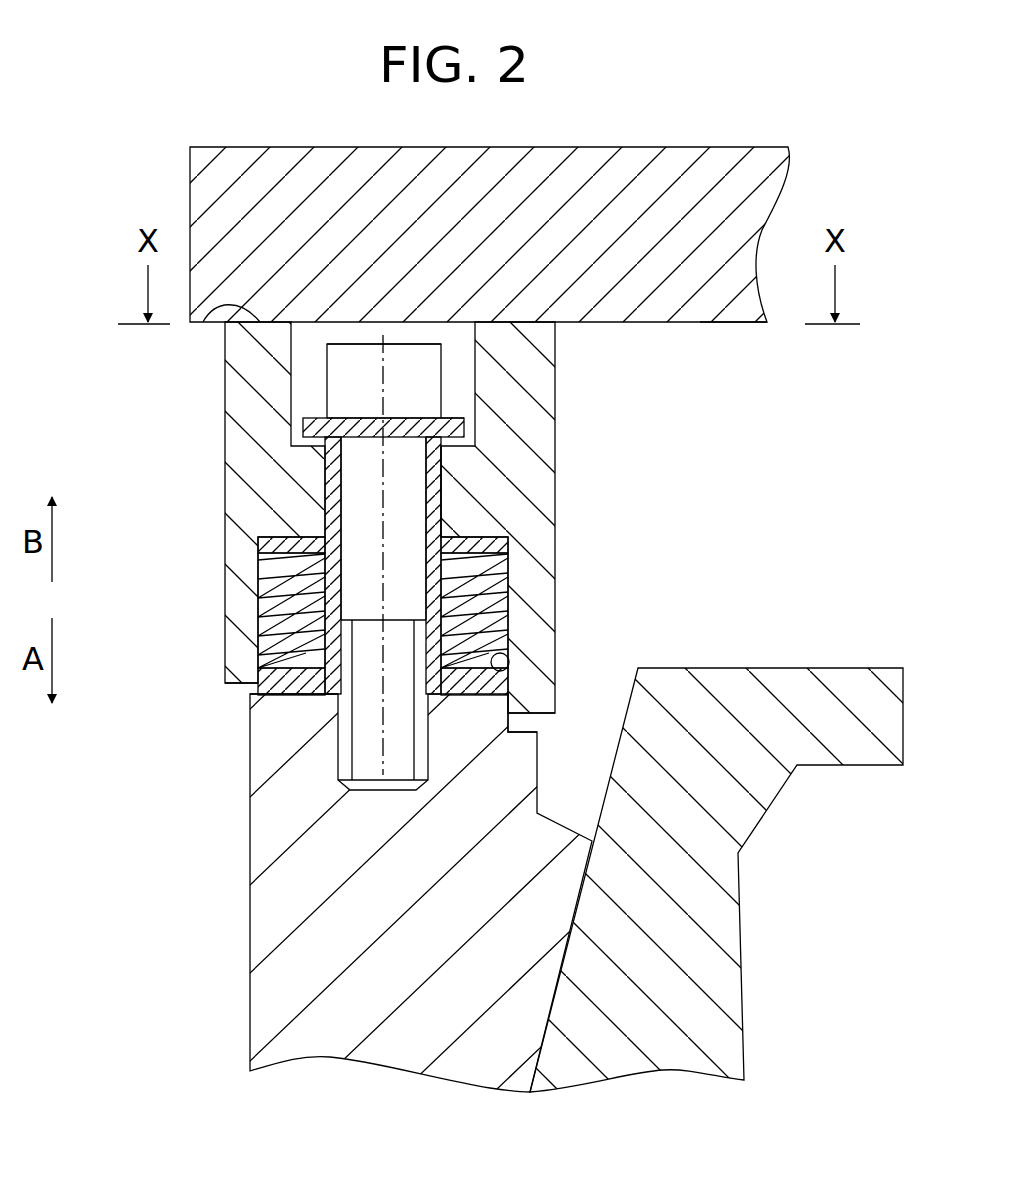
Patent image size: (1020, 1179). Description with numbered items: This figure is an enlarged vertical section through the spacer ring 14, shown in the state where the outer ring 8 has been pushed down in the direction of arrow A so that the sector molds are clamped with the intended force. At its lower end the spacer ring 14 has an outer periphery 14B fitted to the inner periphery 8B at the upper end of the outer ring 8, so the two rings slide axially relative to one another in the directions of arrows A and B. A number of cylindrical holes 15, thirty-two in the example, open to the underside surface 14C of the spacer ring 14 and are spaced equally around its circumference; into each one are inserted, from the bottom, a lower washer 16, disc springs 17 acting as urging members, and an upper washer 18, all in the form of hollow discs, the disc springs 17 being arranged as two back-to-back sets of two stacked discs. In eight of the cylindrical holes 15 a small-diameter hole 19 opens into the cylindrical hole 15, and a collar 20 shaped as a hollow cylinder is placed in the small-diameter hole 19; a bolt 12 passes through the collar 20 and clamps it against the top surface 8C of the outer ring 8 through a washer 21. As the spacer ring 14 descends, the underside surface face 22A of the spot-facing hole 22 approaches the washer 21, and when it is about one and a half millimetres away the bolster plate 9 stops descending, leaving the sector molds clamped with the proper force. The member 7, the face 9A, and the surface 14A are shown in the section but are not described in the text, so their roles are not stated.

The second member 7 is at (700, 1016).
The outer ring 8 is at (313, 980).
The inner periphery of the outer ring 8B is at (513, 723).
The top surface of the outer ring 8C is at (277, 700).
The bolster plate 9 is at (760, 172).
The lower surface of plate 9A is at (727, 323).
The bolt 12 is at (417, 387).
The spacer ring 14 is at (535, 530).
The upper surface of holder block 14A is at (205, 322).
The outer periphery of the spacer ring 14B is at (513, 707).
The underside surface of the spacer ring 14C is at (232, 695).
The cylindrical hole 15 is at (508, 665).
The lower washer 16 is at (258, 680).
The disc springs 17 is at (258, 603).
The upper washer 18 is at (260, 525).
The small-diameter hole 19 is at (325, 462).
The collar 20 is at (442, 515).
The washer 21 is at (464, 428).
The spot-facing hole 22 is at (478, 352).
The underside surface face of the spot-facing hole 22A is at (303, 428).